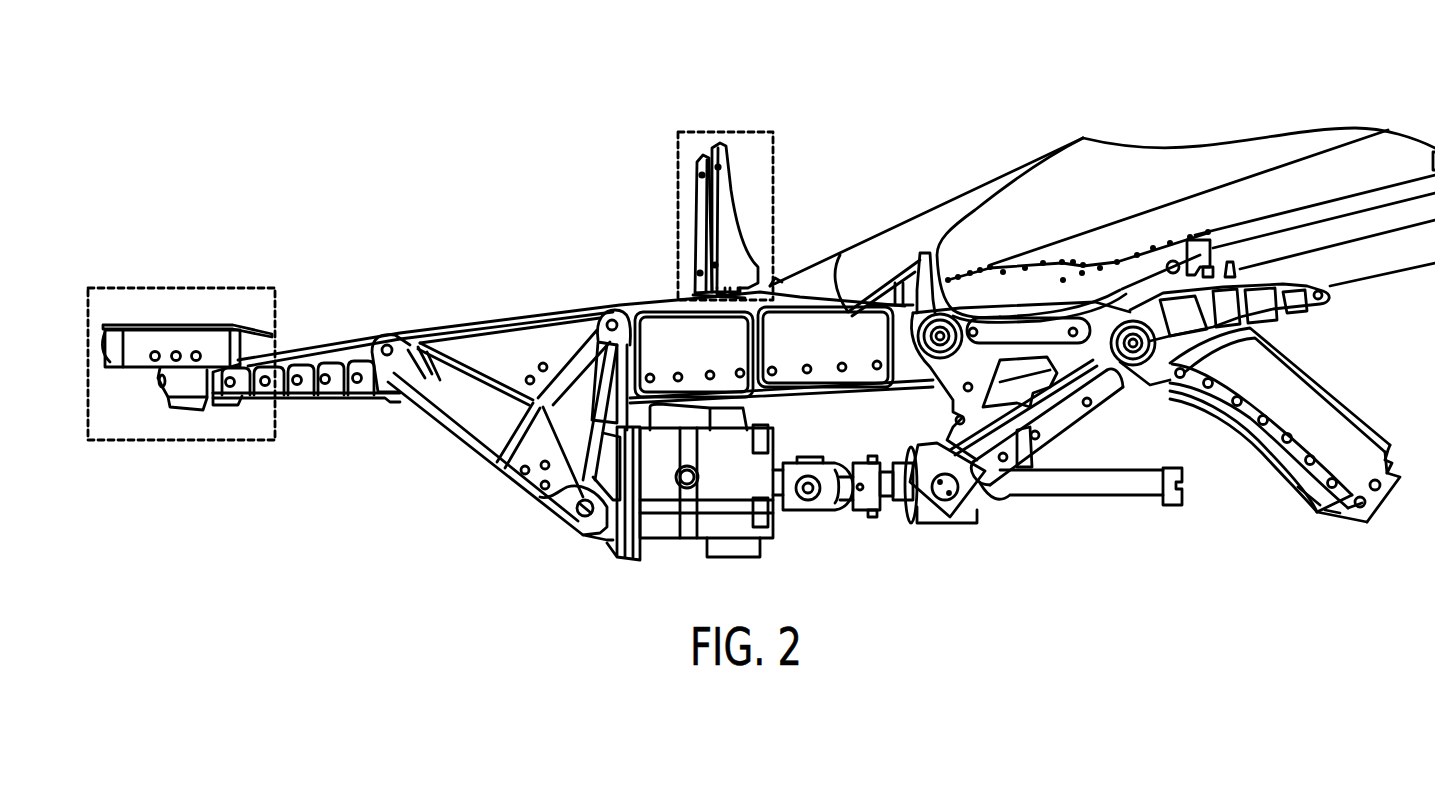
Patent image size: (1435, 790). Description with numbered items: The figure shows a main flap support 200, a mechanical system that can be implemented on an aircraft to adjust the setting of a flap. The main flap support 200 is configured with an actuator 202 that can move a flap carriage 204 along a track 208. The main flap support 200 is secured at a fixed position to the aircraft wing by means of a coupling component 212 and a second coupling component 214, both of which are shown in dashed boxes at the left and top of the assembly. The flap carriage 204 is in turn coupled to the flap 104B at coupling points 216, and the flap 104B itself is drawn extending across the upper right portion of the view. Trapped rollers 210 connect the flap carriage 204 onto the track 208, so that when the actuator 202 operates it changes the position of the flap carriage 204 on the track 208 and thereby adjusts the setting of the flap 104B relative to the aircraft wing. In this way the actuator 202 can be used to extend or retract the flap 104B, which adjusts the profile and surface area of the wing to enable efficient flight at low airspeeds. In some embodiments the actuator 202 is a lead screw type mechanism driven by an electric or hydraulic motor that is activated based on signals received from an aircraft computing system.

The main flap support 200 is at (418, 250).
The actuator 202 is at (889, 549).
The flap carriage 204 is at (1080, 423).
The track 208 is at (1343, 397).
The trapped rollers 210 is at (918, 300).
The coupling component 212 is at (188, 289).
The coupling component 214 is at (680, 238).
The coupling points 216 is at (935, 240).
The flap 104B is at (1060, 142).